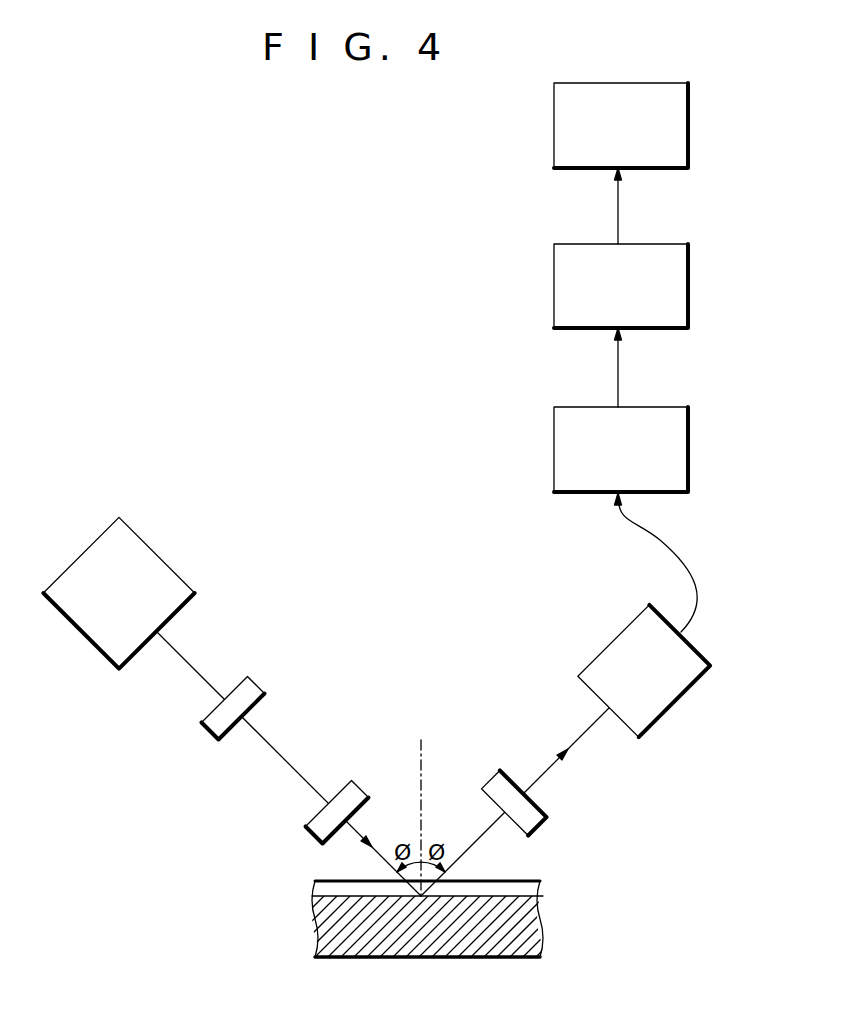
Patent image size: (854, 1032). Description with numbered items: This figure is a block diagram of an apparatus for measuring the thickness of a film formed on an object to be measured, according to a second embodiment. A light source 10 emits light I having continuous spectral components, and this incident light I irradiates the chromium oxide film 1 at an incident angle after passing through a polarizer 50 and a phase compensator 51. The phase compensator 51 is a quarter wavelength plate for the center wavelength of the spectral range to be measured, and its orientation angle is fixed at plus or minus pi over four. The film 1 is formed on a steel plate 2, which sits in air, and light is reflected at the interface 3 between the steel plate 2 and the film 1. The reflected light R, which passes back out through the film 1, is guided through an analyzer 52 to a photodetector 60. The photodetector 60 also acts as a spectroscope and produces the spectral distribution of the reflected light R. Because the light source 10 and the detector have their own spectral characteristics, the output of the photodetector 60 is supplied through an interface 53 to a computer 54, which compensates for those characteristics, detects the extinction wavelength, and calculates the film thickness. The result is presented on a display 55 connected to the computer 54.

The light source 10 is at (175, 577).
The polarizer 50 is at (250, 688).
The phase compensator 51 is at (355, 793).
The analyzer 52 is at (500, 783).
The photodetector 60 is at (606, 658).
The interface 53 is at (558, 473).
The computer 54 is at (558, 309).
The display 55 is at (556, 148).
The chromium oxide film 1 is at (517, 889).
The interface 3 is at (525, 895).
The steel plate 2 is at (518, 935).
The incident light I is at (353, 838).
The reflected light R is at (484, 838).